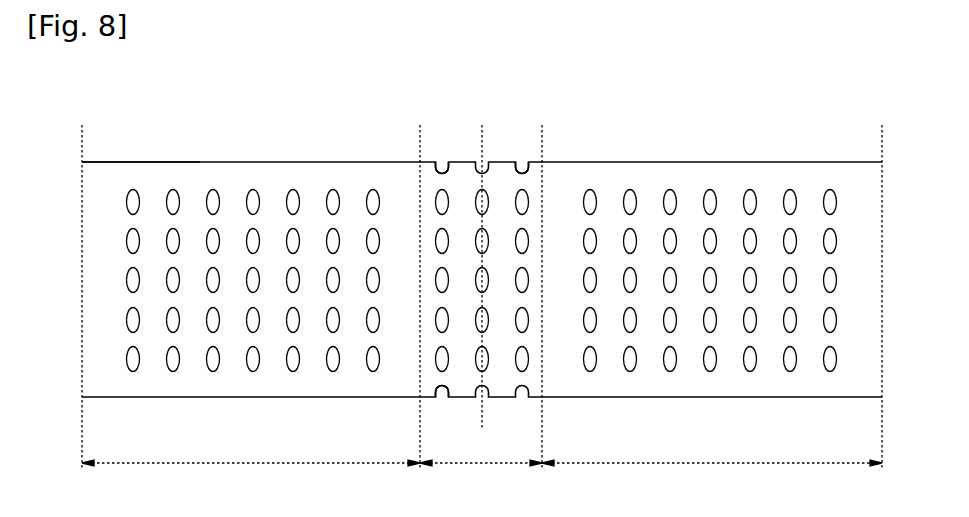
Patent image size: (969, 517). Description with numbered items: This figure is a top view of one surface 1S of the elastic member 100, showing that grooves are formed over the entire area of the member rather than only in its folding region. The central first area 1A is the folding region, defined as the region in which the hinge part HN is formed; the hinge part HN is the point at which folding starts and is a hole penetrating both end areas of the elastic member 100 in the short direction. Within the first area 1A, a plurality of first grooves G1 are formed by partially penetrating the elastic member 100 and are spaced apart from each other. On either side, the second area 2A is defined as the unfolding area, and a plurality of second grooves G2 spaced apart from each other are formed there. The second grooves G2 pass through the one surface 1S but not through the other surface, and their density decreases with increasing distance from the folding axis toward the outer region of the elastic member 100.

The elastic member 100 is at (804, 162).
The one surface 1S is at (100, 188).
The second groove G2 is at (250, 187).
The first groove G1 is at (523, 167).
The hinge part HN is at (442, 167).
The first area 1A is at (481, 474).
The second area 2A is at (482, 474).